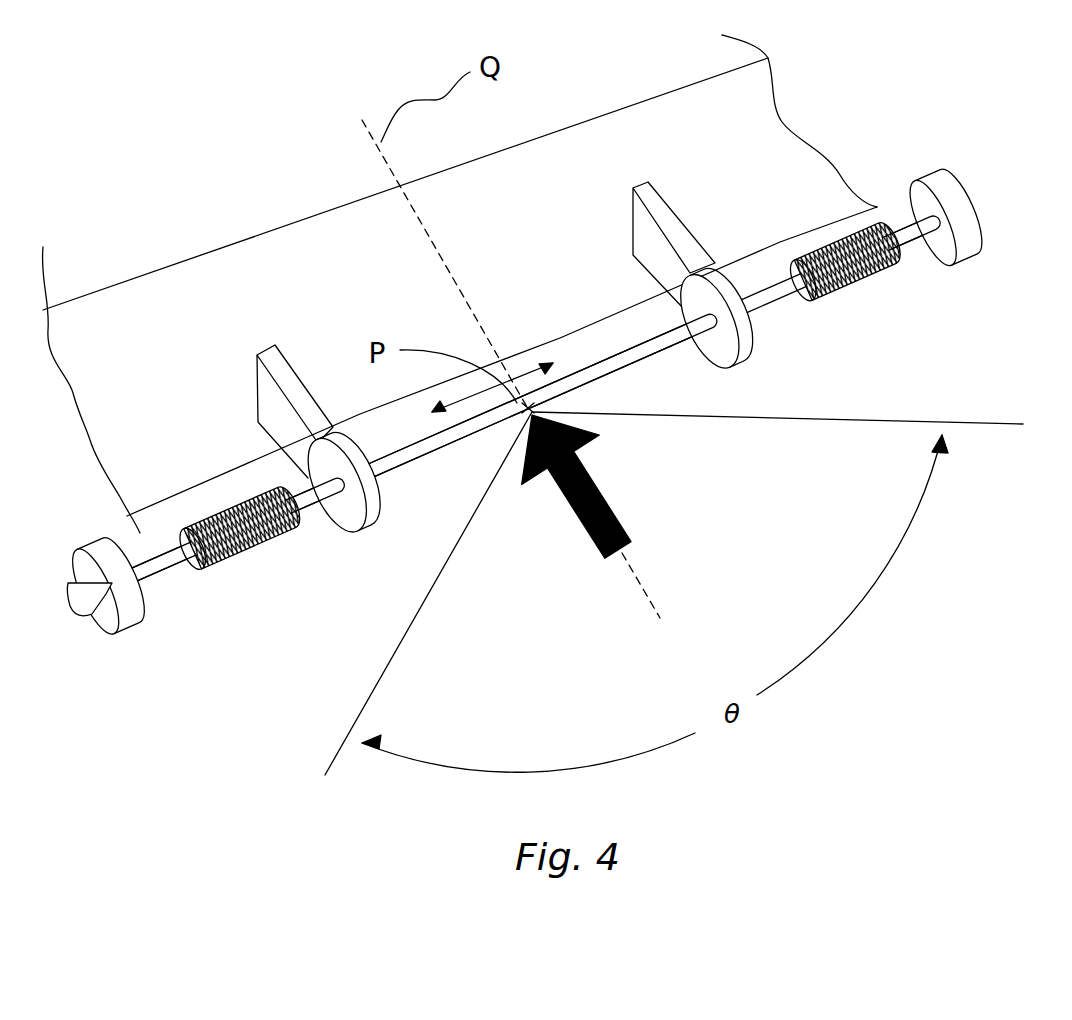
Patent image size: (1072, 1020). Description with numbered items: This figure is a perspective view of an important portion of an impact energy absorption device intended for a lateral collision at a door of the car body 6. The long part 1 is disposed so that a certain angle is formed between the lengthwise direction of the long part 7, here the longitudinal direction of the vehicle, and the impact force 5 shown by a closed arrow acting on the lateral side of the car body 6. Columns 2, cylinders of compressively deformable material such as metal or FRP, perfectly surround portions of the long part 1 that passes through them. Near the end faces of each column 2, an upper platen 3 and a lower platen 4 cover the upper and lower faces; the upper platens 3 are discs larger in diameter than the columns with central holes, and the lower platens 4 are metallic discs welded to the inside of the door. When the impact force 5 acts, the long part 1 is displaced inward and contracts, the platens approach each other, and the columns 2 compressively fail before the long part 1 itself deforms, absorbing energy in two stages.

The long part 1 is at (427, 450).
The column 2 is at (240, 497).
The upper platen 3 is at (137, 603).
The lower platen 4 is at (357, 540).
The impact force 5 is at (625, 527).
The carbody 6 is at (433, 266).
The lengthwise direction of the long part 7 is at (527, 407).